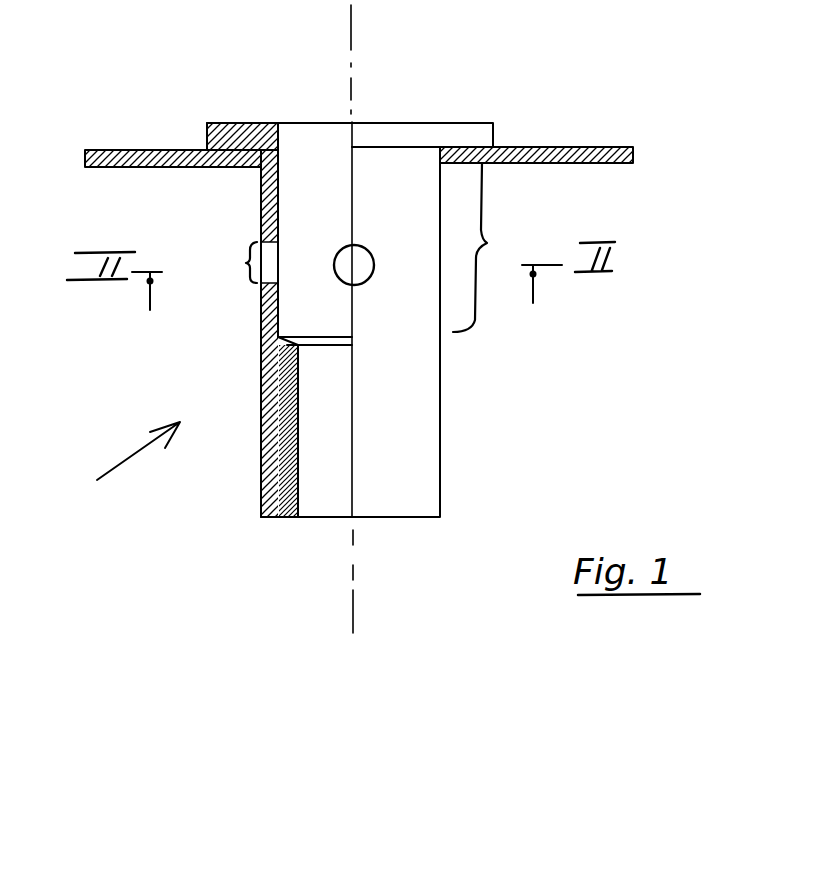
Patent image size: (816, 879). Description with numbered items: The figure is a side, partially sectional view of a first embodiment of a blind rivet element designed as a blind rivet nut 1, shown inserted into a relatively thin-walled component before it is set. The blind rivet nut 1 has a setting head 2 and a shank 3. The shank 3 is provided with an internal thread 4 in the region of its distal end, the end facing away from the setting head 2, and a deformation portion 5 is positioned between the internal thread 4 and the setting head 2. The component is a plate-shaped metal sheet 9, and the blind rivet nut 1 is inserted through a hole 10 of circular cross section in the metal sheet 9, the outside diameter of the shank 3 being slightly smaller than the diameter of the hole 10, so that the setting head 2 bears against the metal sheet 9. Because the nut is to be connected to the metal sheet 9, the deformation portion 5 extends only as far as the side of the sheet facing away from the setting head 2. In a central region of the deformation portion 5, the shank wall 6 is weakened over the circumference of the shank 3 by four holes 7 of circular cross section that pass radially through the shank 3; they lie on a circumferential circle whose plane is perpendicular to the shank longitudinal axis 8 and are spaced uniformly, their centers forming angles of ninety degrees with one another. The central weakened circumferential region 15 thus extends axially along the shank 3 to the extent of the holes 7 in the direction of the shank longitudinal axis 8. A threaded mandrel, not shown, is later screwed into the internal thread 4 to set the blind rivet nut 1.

The blind rivet nut 1 is at (121, 475).
The setting head 2 is at (233, 124).
The shank 3 is at (422, 358).
The internal thread 4 is at (300, 352).
The deformation portion 5 is at (484, 247).
The shank wall 6 is at (261, 198).
The holes 7 is at (340, 252).
The shank longitudinal axis 8 is at (345, 24).
The metal sheet 9 is at (130, 167).
The hole 10 is at (257, 170).
The central weakened circumferential region 15 is at (229, 265).